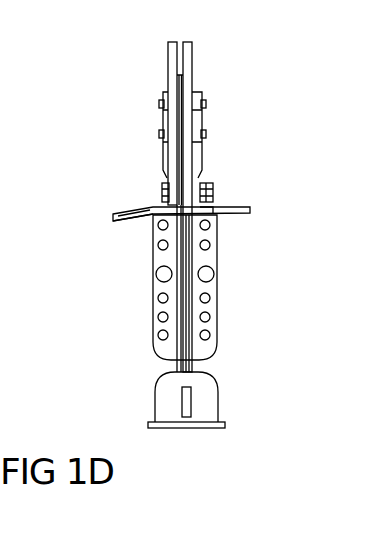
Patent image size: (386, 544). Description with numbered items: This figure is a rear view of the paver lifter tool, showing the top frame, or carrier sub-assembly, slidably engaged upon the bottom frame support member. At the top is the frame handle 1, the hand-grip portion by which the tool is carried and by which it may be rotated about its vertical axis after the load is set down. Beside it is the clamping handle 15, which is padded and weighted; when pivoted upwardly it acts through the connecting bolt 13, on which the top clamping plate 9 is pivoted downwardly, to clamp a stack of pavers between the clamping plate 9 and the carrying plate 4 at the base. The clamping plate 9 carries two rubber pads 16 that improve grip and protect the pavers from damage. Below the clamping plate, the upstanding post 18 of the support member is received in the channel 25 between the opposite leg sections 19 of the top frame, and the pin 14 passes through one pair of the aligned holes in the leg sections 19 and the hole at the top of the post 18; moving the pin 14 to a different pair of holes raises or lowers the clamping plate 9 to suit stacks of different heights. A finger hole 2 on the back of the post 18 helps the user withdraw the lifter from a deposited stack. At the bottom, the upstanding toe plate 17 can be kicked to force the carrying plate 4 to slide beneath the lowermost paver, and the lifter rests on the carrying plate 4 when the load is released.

The frame handle 1 is at (178, 62).
The channel 25 is at (190, 52).
The finger hole 2 is at (198, 328).
The clamping handle 15 is at (202, 117).
The connecting bolt 13 is at (162, 192).
The pin 14 is at (217, 221).
The top clamping plate 9 is at (212, 208).
The rubber pads 16 is at (138, 218).
The post 18 is at (188, 243).
The leg sections 19 is at (190, 290).
The toe plate 17 is at (212, 397).
The carrying plate 4 is at (196, 427).